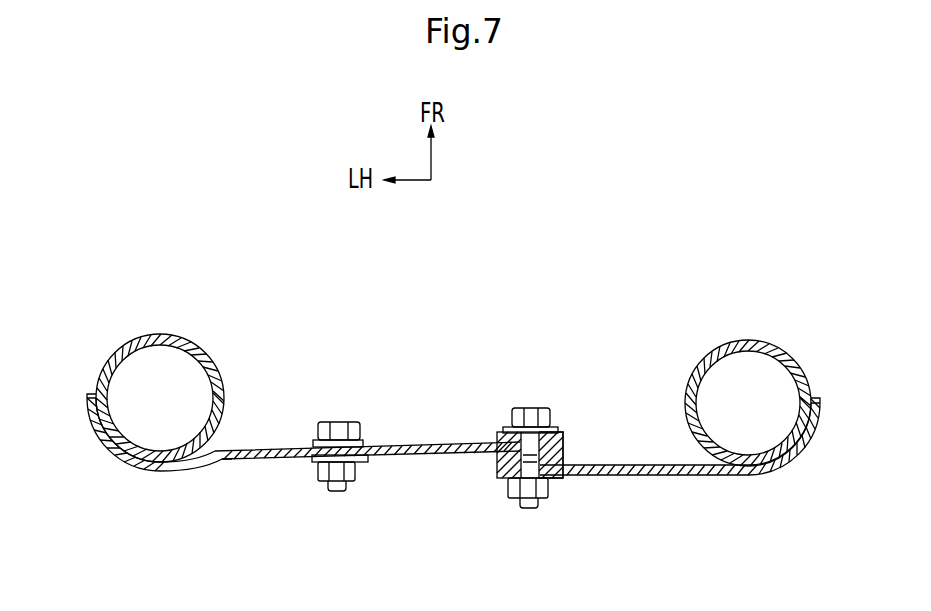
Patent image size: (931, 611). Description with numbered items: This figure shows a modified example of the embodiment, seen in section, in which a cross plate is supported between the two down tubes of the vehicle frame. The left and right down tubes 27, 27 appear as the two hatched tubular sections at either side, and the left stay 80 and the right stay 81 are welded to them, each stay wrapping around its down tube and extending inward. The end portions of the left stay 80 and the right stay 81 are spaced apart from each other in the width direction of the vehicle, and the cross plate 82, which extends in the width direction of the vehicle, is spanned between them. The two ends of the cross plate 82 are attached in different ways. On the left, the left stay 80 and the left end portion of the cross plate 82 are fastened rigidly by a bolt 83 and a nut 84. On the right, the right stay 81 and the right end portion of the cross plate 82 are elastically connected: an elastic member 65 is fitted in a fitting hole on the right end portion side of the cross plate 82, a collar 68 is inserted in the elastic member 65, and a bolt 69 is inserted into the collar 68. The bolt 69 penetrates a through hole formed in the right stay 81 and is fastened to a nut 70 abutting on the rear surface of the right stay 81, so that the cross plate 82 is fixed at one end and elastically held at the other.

The down tube 27 is at (148, 334).
The left stay 80 is at (242, 464).
The right stay 81 is at (658, 478).
The cross plate 82 is at (420, 445).
The bolt 83 is at (340, 432).
The nut 84 is at (332, 470).
The collar 68 is at (505, 432).
The elastic member 65 is at (566, 442).
The bolt 69 is at (531, 412).
The nut 70 is at (515, 487).